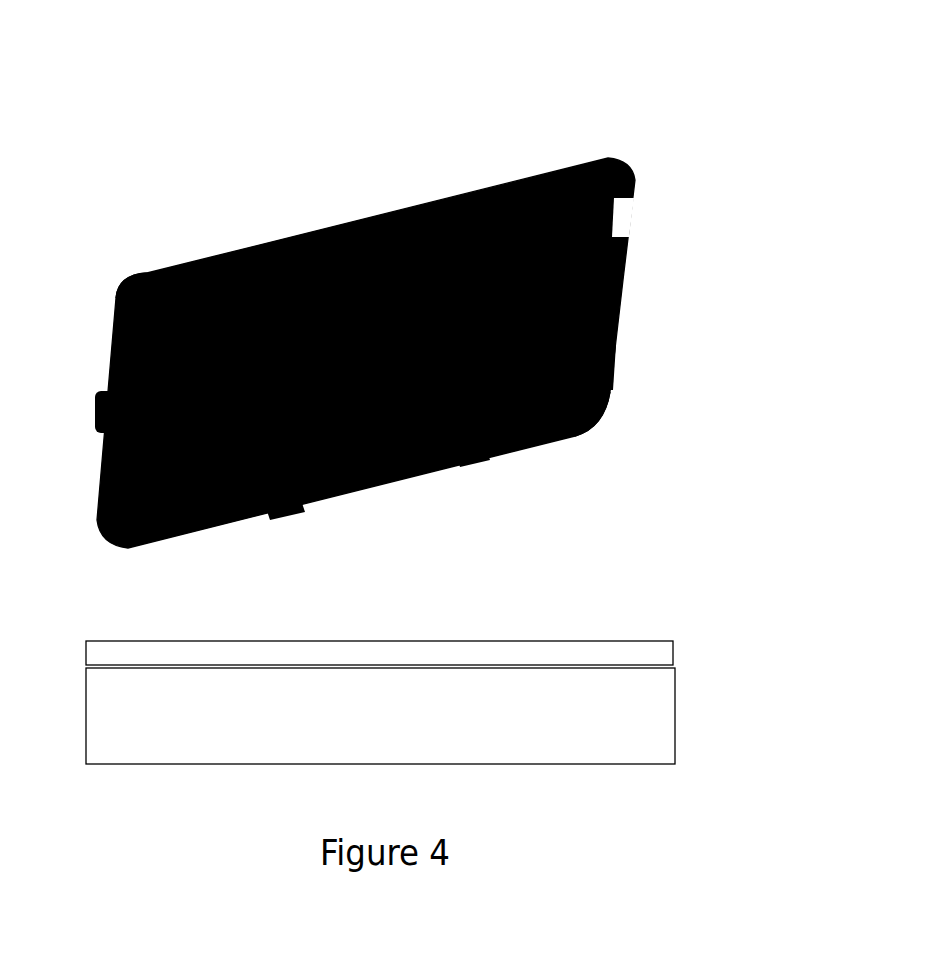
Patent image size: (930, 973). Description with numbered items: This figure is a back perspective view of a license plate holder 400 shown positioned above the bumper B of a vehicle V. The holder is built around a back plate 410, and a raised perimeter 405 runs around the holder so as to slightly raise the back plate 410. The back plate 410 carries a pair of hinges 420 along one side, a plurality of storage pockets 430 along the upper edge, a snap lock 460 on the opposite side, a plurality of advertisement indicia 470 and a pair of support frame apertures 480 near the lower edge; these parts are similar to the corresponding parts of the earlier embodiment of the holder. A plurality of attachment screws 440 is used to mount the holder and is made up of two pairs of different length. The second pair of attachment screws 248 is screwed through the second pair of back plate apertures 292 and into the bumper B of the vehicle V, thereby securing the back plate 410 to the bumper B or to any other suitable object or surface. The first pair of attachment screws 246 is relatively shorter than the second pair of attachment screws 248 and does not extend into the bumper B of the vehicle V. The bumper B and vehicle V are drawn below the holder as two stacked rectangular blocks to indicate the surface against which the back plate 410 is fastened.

The license plate holder 400 is at (375, 324).
The raised perimeter 405 is at (627, 156).
The back plate 410 is at (138, 270).
The second pair of back plate apertures 292 is at (513, 188).
The plurality of advertisement indicia 470 is at (287, 240).
The plurality of attachment screws 440 is at (385, 373).
The second pair of attachment screws 248 is at (477, 208).
The first pair of attachment screws 246 is at (468, 458).
The plurality of storage pockets 430 is at (352, 242).
The pair of hinges 420 is at (603, 358).
The snap lock 460 is at (100, 408).
The pair of support frame apertures 480 is at (190, 537).
The bumper B is at (558, 658).
The vehicle V is at (580, 718).